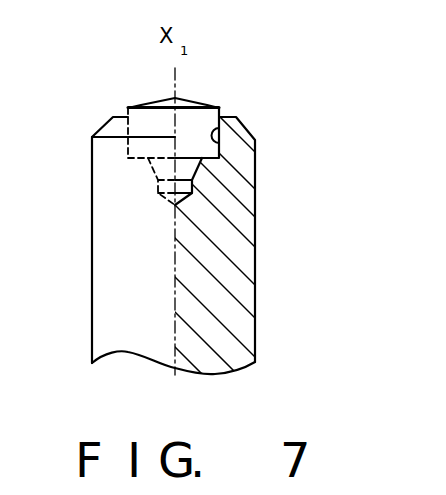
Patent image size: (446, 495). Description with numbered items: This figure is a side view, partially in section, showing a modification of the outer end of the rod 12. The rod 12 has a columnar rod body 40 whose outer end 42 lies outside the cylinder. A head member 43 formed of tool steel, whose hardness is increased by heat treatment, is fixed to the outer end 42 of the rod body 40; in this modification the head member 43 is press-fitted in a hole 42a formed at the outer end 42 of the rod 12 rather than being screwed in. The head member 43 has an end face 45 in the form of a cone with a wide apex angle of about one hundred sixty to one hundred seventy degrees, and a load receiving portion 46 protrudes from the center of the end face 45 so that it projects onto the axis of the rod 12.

The rod 12 is at (255, 204).
The rod body 40 is at (247, 270).
The outer end 42 is at (246, 128).
The hole 42a is at (219, 148).
The head member 43 is at (198, 105).
The end face 45 is at (140, 107).
The load receiving portion 46 is at (173, 100).